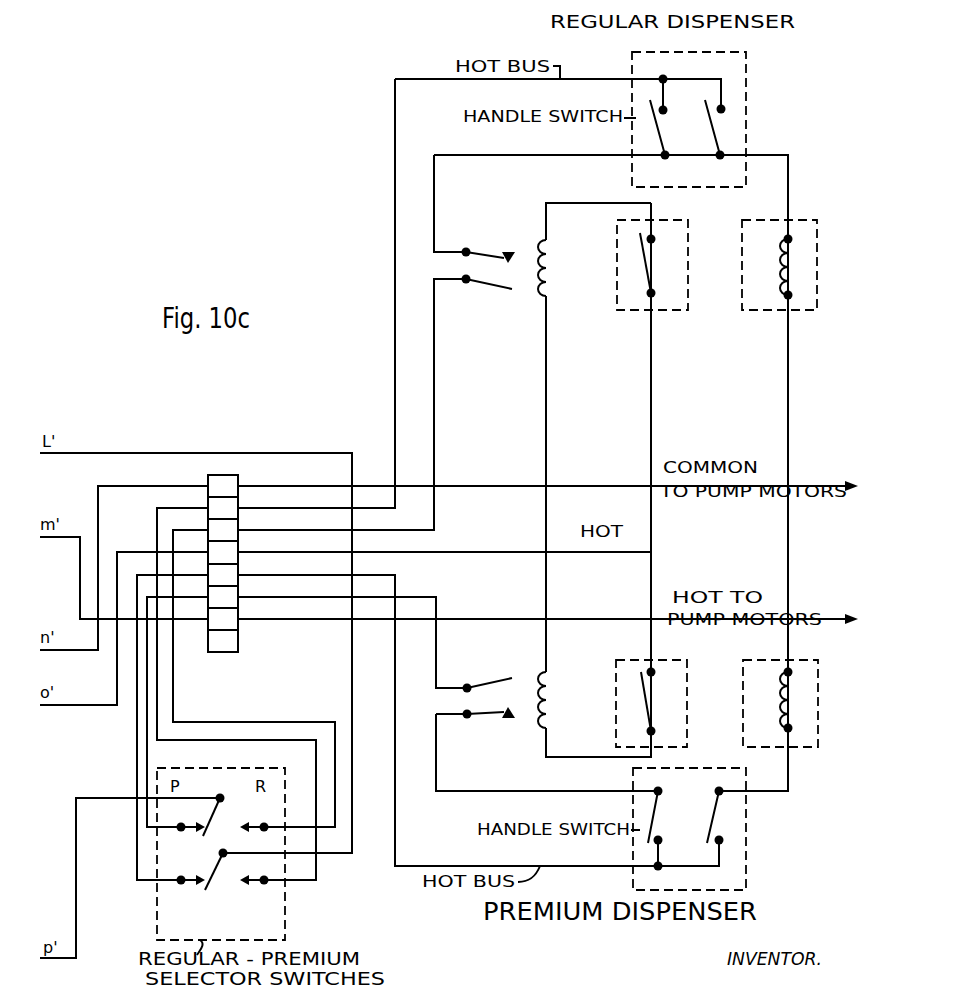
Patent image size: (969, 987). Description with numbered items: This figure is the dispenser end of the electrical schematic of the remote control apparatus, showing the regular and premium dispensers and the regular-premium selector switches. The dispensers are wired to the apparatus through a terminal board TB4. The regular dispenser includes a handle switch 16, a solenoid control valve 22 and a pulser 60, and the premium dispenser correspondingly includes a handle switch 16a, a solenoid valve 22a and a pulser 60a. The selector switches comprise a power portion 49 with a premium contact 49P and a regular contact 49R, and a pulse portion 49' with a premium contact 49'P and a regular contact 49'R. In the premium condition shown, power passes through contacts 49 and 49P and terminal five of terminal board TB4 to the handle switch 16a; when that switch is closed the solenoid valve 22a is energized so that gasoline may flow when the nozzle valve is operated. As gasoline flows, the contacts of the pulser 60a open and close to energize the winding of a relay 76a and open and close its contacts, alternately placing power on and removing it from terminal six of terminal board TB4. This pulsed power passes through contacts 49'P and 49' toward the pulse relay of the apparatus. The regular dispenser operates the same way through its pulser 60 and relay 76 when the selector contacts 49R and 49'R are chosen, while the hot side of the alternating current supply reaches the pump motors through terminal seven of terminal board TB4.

The handle switch 16 is at (742, 73).
The solenoid control valve 22 is at (829, 212).
The pulser 60 is at (665, 304).
The relay 76 is at (495, 243).
The handle switch 16a is at (640, 849).
The solenoid valve 22a is at (808, 745).
The pulser 60a is at (638, 660).
The relay 76a is at (517, 744).
The power portion of selector switch 49 is at (217, 880).
The premium contact of power portion 49P is at (184, 872).
The regular contact of power portion 49R is at (255, 872).
The pulse portion of selector switch 49' is at (229, 815).
The premium contact of pulse portion 49'P is at (183, 817).
The regular contact of pulse portion 49'R is at (258, 839).
The terminal board TB4 is at (226, 577).